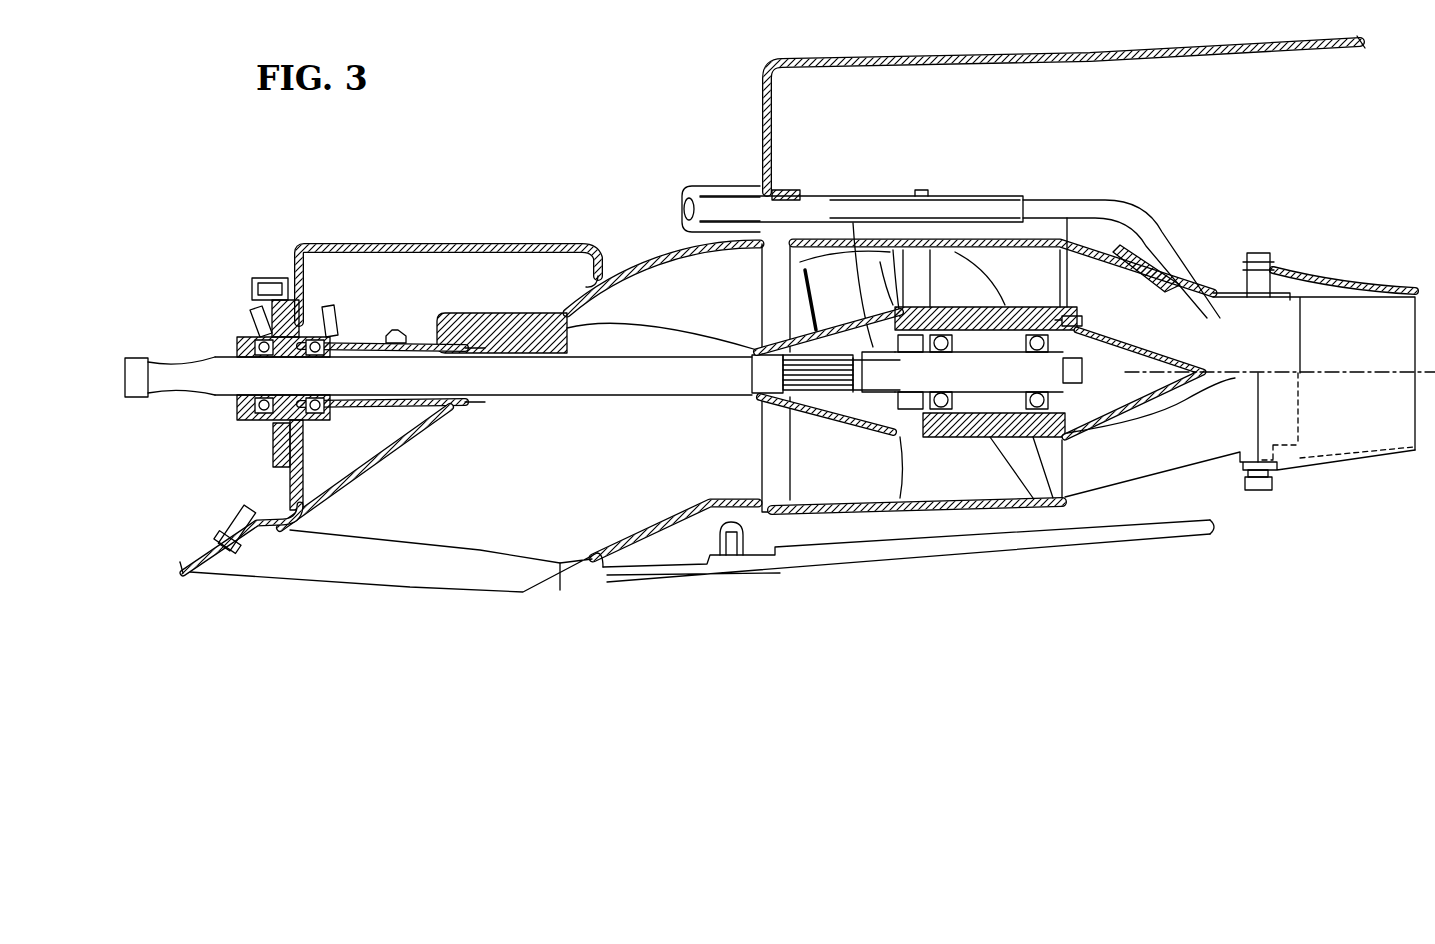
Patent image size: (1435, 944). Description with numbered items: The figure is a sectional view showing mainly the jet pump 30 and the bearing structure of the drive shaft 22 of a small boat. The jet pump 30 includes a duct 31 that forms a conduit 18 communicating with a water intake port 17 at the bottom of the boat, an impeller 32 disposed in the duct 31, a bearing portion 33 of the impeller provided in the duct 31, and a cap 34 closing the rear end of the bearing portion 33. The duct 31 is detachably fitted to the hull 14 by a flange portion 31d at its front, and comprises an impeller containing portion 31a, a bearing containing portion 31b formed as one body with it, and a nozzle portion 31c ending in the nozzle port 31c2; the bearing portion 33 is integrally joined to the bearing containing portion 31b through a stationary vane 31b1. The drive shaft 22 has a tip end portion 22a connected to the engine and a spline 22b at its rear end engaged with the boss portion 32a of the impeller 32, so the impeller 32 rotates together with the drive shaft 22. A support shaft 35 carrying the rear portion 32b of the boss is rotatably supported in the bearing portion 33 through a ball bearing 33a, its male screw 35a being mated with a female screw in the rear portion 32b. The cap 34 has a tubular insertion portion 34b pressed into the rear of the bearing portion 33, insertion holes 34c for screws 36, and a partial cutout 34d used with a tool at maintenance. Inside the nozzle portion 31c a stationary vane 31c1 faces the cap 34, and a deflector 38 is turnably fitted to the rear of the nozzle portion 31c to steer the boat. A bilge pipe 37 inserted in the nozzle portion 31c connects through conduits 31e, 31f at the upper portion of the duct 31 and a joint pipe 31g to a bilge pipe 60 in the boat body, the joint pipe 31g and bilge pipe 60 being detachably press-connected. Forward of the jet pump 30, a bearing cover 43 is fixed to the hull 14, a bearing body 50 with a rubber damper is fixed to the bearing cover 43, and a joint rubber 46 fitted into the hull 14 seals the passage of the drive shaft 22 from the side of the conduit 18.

The hull 14 is at (668, 255).
The water intake port 17 is at (340, 550).
The conduit 18 is at (574, 458).
The drive shaft 22 is at (637, 380).
The tip end portion 22a is at (137, 362).
The spline 22b is at (805, 350).
The jet pump 30 is at (986, 514).
The duct 31 is at (918, 514).
The impeller containing portion 31a is at (820, 515).
The bearing containing portion 31b is at (960, 505).
The stationary vane 31b1 is at (995, 497).
The nozzle portion 31c is at (1203, 461).
The stationary vane 31c1 is at (1090, 270).
The nozzle port 31c2 is at (1300, 337).
The flange portion 31d is at (778, 178).
The conduit 31e is at (948, 210).
The conduit 31f is at (887, 207).
The joint pipe 31g is at (754, 187).
The impeller 32 is at (874, 460).
The boss portion 32a is at (792, 410).
The rear portion of the boss portion 32b is at (880, 330).
The bearing portion 33 is at (992, 440).
The ball bearing 33a is at (1045, 440).
The cap 34 is at (1122, 422).
The insertion portion 34b is at (1092, 432).
The insertion hole 34c is at (1077, 313).
The partial cutout 34d is at (1160, 470).
The support shaft 35 is at (966, 370).
The male screw 35a is at (862, 355).
The screw 36 is at (1080, 328).
The bilge pipe 37 is at (1135, 205).
The deflector 38 is at (1352, 290).
The bearing cover 43 is at (395, 243).
The joint rubber 46 is at (585, 330).
The bearing body 50 is at (258, 440).
The bilge pipe 60 is at (700, 186).